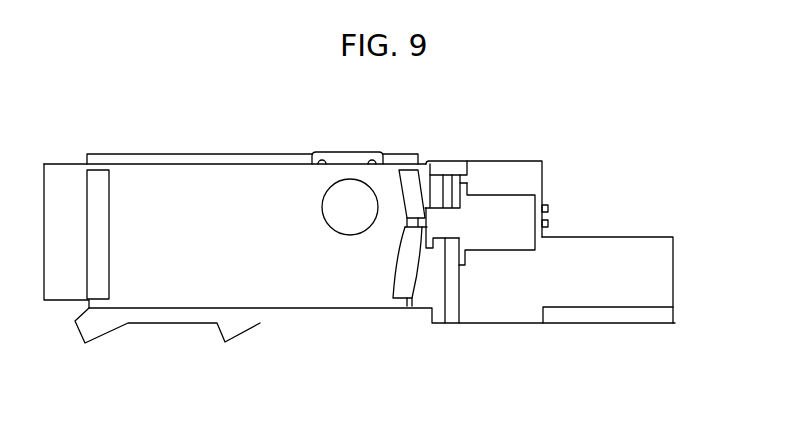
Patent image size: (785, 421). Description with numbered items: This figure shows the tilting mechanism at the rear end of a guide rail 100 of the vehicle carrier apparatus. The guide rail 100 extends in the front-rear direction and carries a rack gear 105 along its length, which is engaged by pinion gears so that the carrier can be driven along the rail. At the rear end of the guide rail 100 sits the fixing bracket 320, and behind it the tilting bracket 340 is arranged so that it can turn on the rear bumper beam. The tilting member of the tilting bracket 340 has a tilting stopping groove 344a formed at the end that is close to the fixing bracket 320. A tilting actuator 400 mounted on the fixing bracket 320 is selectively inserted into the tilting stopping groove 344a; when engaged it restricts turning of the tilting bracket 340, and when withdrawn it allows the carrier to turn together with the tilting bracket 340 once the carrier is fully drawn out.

The guide rail 100 is at (657, 258).
The rack gear 105 is at (630, 314).
The fixing bracket 320 is at (463, 323).
The tilting bracket 340 is at (412, 185).
The tilting stopping groove 344a is at (406, 219).
The tilting actuator 400 is at (523, 210).